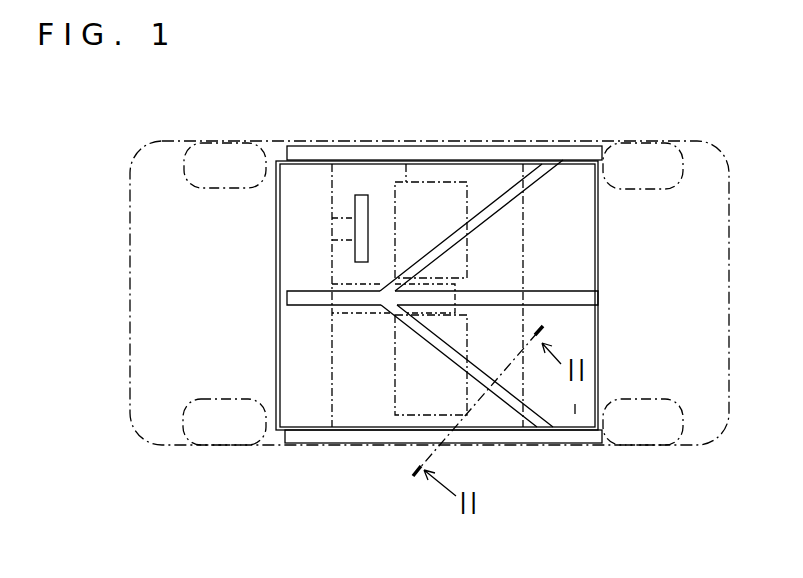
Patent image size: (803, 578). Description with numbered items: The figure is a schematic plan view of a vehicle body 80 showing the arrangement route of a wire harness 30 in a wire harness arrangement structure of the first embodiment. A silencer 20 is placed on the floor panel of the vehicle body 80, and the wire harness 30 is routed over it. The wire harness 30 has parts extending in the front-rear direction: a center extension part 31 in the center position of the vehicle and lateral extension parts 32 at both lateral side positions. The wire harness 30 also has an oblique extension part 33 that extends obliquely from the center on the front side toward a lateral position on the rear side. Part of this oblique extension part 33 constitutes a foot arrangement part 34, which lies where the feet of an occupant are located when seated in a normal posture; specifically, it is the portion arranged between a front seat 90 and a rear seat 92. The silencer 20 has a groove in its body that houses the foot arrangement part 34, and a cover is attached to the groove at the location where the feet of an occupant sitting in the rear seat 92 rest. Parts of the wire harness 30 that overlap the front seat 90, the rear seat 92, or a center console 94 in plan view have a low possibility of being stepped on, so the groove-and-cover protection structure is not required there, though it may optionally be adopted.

The silencer 20 is at (350, 408).
The wire harness 30 is at (471, 146).
The center extension part 31 is at (598, 297).
The lateral extension part 32 is at (352, 157).
The oblique extension part 33 is at (436, 336).
The foot arrangement part 34 is at (511, 199).
The vehicle body 80 is at (271, 446).
The front seat 90 is at (400, 160).
The rear seat 92 is at (575, 414).
The center console 94 is at (342, 287).